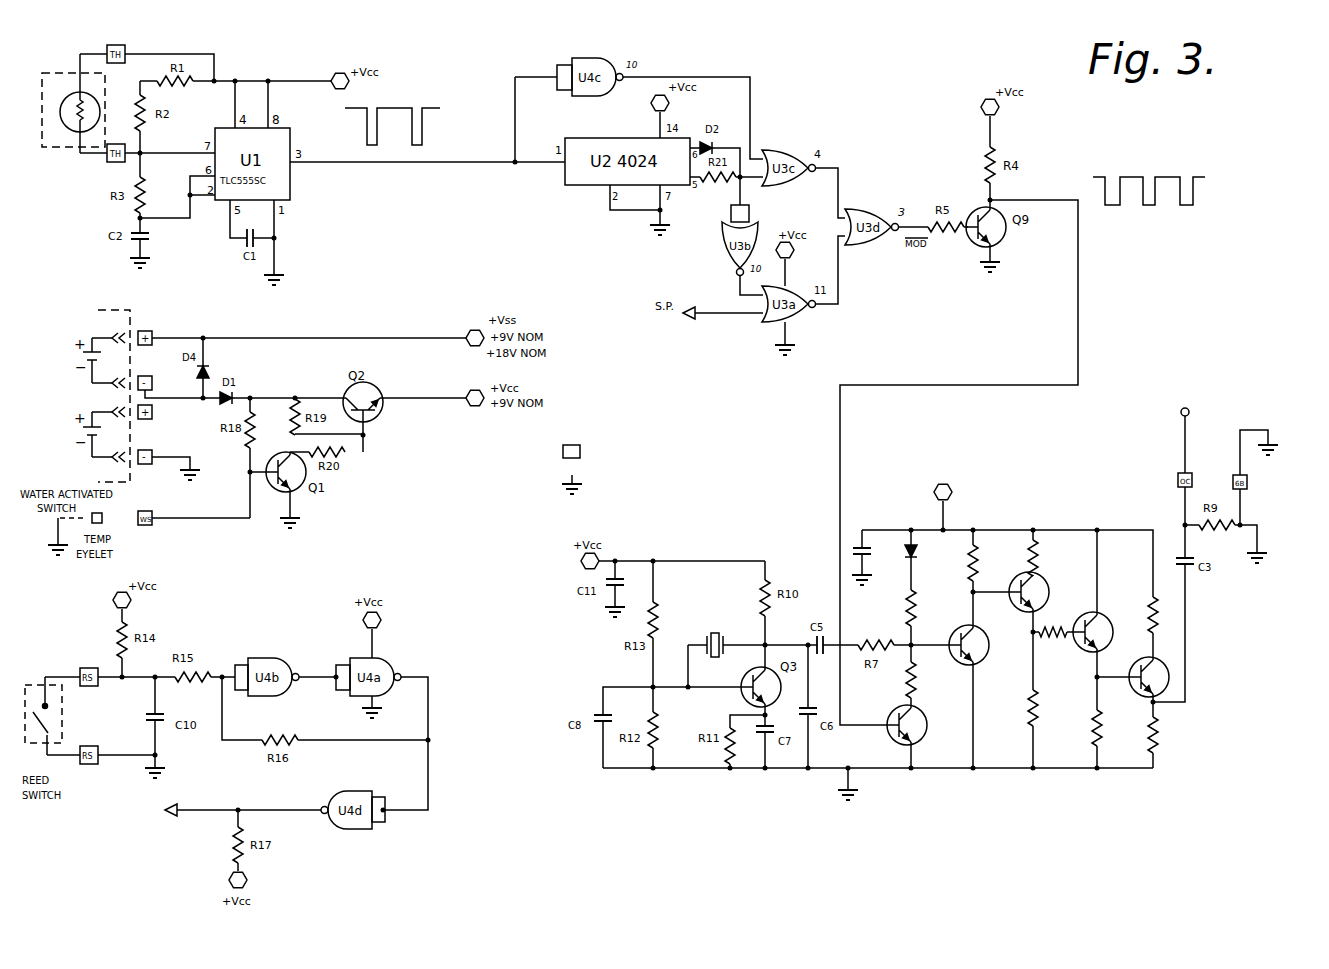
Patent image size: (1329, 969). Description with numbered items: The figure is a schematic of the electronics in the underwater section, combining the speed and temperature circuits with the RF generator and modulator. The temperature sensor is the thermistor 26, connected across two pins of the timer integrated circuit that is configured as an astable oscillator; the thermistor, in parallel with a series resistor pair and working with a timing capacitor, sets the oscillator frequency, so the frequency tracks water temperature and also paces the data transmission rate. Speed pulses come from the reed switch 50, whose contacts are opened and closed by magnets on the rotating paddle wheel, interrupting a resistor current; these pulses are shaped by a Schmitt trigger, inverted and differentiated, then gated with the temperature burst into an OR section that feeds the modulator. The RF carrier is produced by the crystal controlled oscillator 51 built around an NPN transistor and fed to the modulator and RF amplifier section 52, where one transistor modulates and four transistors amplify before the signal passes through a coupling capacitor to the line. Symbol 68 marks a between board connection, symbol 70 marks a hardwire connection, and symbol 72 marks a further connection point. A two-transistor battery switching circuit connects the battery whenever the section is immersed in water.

The thermistor 26 is at (63, 98).
The reed switch 50 is at (36, 691).
The crystal controlled oscillator 51 is at (716, 631).
The modulator and RF amplifier section 52 is at (1044, 497).
The between board connection symbol 68 is at (163, 815).
The hardwire connection symbol 70 is at (580, 451).
The output contact 72 is at (580, 486).